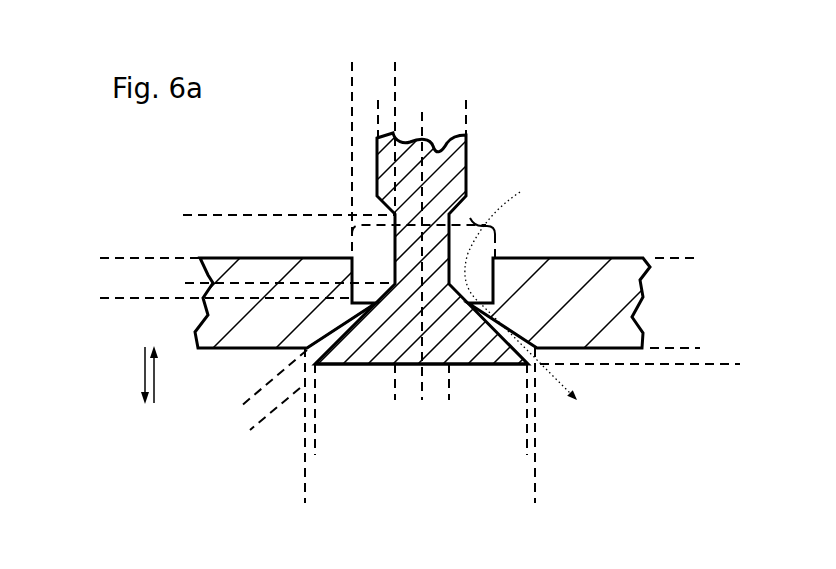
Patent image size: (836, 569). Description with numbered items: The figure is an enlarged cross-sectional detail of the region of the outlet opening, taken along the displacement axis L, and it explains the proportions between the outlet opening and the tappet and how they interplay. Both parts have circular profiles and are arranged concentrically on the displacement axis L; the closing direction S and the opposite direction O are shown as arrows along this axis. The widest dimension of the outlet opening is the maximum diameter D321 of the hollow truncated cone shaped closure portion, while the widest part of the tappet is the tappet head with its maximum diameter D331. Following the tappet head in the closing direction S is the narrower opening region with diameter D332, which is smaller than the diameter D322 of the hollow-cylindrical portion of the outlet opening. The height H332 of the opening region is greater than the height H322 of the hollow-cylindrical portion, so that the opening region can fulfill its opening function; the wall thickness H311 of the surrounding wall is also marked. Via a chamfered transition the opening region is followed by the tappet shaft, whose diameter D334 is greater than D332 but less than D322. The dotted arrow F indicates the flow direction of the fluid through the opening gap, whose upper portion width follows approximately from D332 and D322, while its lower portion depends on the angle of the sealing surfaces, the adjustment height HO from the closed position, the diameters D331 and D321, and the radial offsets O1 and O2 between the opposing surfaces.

The offset between hole edge and rivet shaft O1 is at (395, 65).
The diameter of the tappet shaft D334 is at (466, 100).
The diameter of the hollow-cylindrical portion D322 is at (470, 218).
The flow direction arrow F is at (521, 285).
The height of the opening region H332 is at (183, 215).
The height of the hollow-cylindrical portion H322 is at (100, 258).
The thickness of plate H311 is at (697, 258).
The adjustment height HO is at (740, 348).
The opening direction O is at (131, 375).
The closing direction S is at (166, 374).
The offset between countersink and rivet cone O2 is at (257, 404).
The displacement axis L is at (449, 403).
The diameter of the opening region D332 is at (527, 457).
The maximum diameter of the tappet head D331 is at (535, 505).
The maximum diameter of the closure portion D321 is at (421, 459).